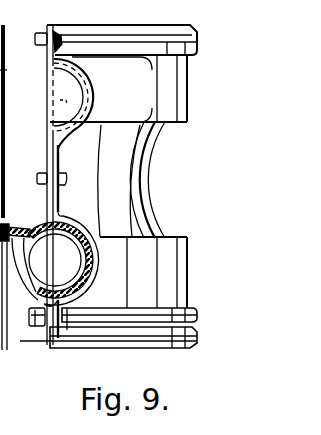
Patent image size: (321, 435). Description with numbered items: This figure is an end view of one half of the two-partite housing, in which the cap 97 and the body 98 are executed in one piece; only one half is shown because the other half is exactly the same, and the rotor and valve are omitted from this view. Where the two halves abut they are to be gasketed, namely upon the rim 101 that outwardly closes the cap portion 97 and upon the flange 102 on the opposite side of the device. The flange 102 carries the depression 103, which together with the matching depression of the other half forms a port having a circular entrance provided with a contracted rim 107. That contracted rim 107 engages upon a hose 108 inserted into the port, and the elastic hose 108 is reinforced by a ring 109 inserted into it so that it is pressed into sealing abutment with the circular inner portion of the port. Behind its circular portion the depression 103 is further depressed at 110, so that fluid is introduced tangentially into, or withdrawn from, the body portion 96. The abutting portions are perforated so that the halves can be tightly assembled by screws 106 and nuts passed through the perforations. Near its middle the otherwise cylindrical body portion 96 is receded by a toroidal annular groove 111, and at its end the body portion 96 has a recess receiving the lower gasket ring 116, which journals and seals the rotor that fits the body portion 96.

The body portion 96 is at (156, 141).
The cap 97 is at (47, 78).
The body 98 is at (186, 278).
The rim 101 is at (46, 97).
The flange 102 is at (86, 234).
The depression 103 is at (70, 104).
The screws 106 is at (40, 37).
The contracted rim 107 is at (53, 62).
The hose 108 is at (12, 227).
The ring 109 is at (84, 292).
The further depression 110 is at (38, 124).
The toroidal annular groove 111 is at (119, 181).
The gasket ring 116 is at (35, 341).